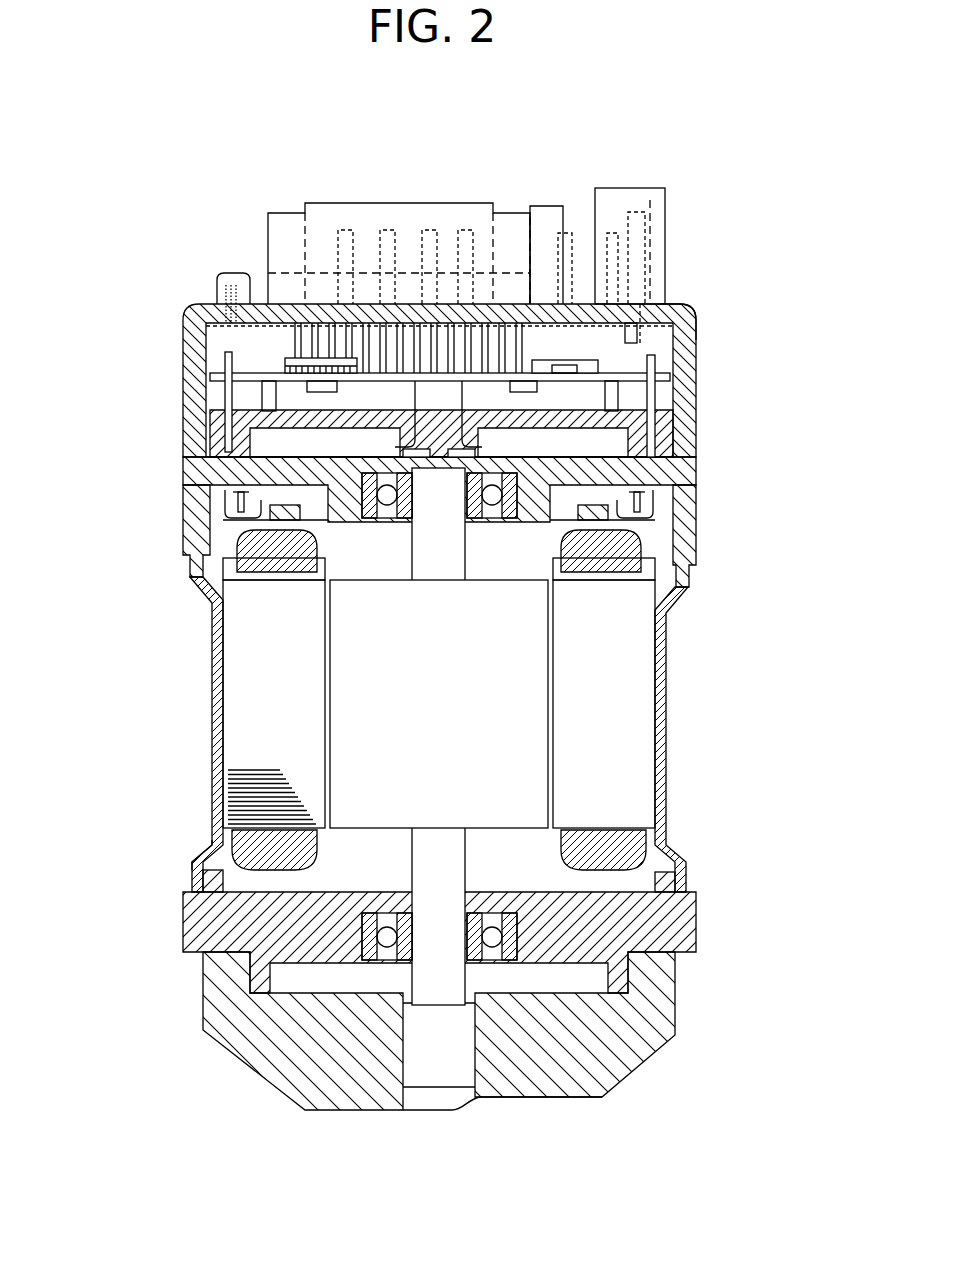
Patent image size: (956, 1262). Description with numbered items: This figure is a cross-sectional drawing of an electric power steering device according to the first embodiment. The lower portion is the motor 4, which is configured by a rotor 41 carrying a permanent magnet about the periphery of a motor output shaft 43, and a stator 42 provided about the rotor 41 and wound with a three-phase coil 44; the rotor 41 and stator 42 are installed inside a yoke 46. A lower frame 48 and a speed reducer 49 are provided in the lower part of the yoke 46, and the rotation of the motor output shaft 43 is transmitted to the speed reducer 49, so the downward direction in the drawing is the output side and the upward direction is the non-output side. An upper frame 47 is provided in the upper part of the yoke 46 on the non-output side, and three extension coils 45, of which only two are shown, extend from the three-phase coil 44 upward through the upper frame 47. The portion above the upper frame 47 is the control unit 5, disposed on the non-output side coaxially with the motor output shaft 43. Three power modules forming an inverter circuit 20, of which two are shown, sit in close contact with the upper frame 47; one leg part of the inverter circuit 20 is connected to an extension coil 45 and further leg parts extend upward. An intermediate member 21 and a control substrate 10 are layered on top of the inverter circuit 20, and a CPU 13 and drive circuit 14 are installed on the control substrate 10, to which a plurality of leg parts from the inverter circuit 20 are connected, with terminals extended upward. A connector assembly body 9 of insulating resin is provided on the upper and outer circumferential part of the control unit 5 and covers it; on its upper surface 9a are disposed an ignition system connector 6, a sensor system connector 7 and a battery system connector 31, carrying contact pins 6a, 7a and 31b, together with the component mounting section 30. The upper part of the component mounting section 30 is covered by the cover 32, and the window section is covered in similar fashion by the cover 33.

The motor 4 is at (665, 835).
The control unit 5 is at (183, 405).
The ignition system connector 6 is at (546, 207).
The contact pin 6a is at (562, 233).
The sensor system connector 7 is at (355, 204).
The contact pin 7a is at (388, 230).
The connector assembly body 9 is at (183, 332).
The upper surface 9a is at (670, 306).
The control substrate 10 is at (660, 378).
The CPU 13 is at (290, 360).
The drive circuit 14 is at (598, 365).
The inverter circuit 20 is at (185, 490).
The intermediate member 21 is at (668, 420).
The component mounting section 30 is at (272, 213).
The battery system connector 31 is at (625, 188).
The contact pin 31b is at (640, 222).
The cover 32 is at (438, 222).
The cover 33 is at (232, 280).
The rotor 41 is at (540, 740).
The stator 42 is at (225, 775).
The motor output shaft 43 is at (455, 878).
The three-phase coil 44 is at (205, 577).
The extension coil 45 is at (230, 497).
The yoke 46 is at (200, 850).
The upper frame 47 is at (183, 468).
The lower frame 48 is at (183, 935).
The speed reducer 49 is at (205, 992).